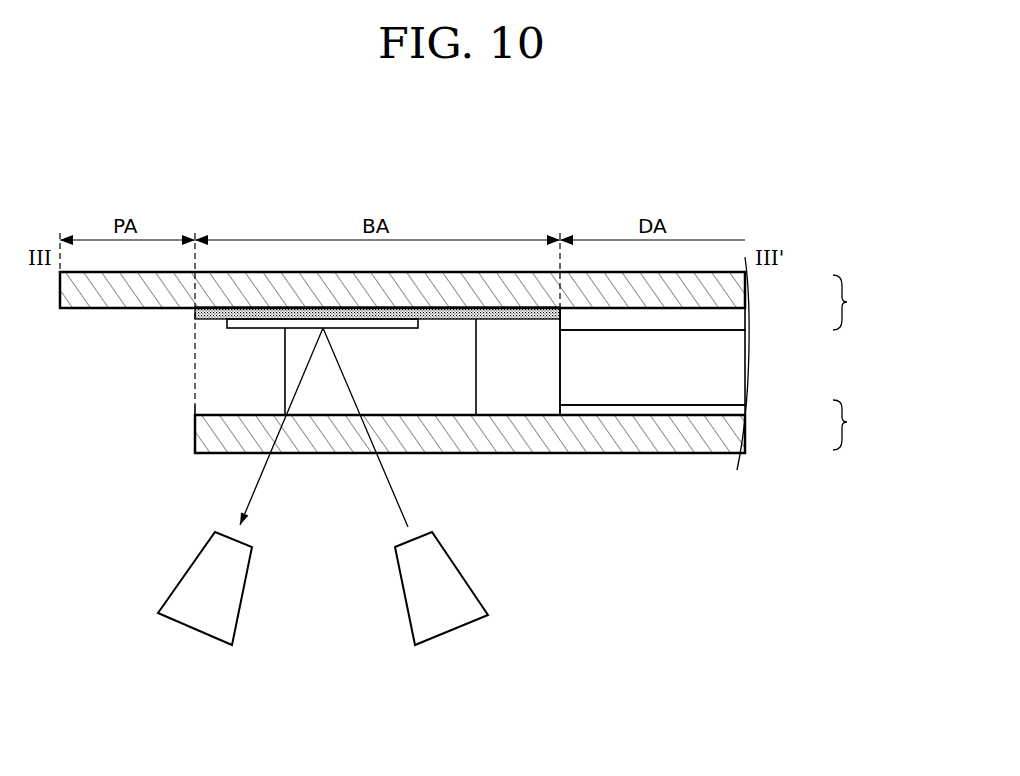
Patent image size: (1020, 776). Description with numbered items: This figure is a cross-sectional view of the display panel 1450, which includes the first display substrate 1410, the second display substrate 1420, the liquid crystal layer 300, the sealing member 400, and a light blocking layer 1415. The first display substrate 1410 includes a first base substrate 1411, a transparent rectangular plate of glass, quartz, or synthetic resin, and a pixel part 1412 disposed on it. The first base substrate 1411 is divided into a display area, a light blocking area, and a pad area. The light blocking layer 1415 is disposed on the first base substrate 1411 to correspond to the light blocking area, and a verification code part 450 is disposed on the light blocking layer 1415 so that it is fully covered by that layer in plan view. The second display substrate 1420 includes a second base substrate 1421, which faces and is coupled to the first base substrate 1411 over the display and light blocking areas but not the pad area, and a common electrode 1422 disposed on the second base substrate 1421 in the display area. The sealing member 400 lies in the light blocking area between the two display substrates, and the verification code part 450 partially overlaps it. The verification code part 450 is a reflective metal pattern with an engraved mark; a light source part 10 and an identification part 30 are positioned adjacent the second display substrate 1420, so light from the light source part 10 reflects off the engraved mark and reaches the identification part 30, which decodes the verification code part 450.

The display panel 1450 is at (737, 184).
The first base substrate 1411 is at (737, 284).
The pixel part 1412 is at (737, 318).
The first display substrate 1410 is at (867, 302).
The liquid crystal layer 300 is at (728, 368).
The common electrode 1422 is at (725, 407).
The second base substrate 1421 is at (725, 437).
The second display substrate 1420 is at (867, 425).
The verification code part 450 is at (250, 323).
The light blocking layer 1415 is at (518, 313).
The sealing member 400 is at (447, 403).
The identification part 30 is at (200, 635).
The light source part 10 is at (447, 635).